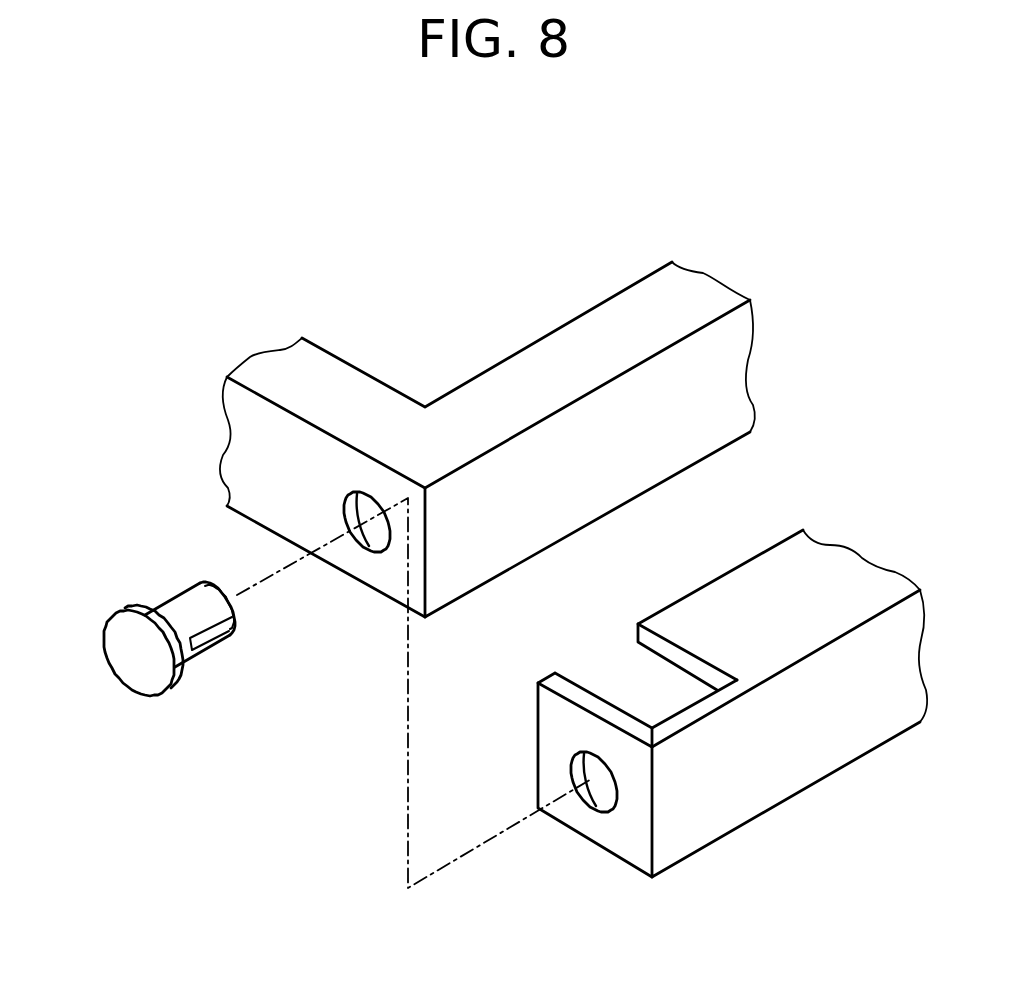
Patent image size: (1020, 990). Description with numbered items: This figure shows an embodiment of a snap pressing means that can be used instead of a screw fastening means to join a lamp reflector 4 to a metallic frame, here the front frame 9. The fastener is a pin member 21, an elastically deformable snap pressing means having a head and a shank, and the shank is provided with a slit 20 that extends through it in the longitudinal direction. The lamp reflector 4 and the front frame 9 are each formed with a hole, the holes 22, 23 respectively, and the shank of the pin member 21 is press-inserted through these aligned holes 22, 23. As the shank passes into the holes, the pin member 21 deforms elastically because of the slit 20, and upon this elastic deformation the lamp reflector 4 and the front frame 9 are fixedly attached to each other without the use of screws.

The lamp reflector 4 is at (825, 577).
The front frame 9 is at (605, 337).
The slit 20 is at (205, 633).
The pin member 21 is at (135, 668).
The hole 22 is at (592, 797).
The hole 23 is at (365, 540).